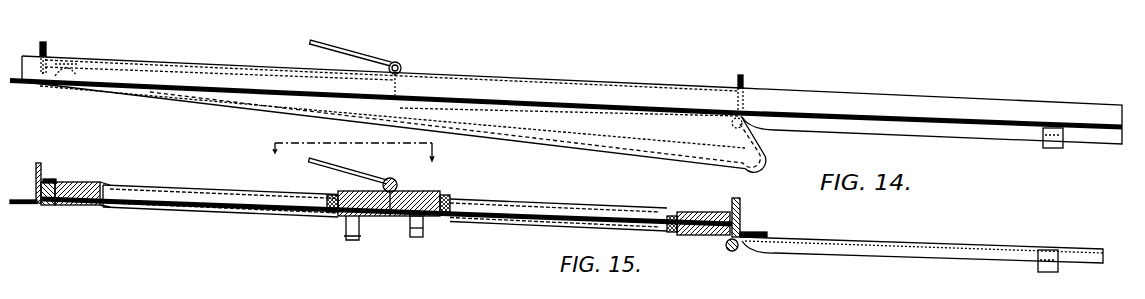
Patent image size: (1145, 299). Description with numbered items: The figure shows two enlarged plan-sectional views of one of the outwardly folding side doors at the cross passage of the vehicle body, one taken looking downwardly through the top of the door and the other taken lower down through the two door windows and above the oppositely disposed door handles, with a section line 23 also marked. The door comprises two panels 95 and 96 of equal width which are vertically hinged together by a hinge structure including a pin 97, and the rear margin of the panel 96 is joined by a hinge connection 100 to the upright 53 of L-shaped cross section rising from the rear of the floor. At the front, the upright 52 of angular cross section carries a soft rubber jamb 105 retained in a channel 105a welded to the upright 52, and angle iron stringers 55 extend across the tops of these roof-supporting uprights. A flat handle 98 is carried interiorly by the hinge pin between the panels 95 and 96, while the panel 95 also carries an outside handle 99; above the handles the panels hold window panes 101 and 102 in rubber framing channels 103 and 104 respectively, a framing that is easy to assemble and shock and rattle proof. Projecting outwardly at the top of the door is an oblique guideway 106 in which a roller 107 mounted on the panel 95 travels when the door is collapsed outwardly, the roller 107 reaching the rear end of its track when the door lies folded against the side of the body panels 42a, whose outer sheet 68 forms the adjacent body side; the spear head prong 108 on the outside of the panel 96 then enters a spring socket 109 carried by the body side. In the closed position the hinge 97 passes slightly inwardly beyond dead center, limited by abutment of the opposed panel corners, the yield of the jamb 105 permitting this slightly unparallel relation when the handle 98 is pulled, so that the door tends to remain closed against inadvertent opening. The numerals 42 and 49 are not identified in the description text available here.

In FIG. 15, the section line 23- 23 is at (358, 153).
In FIG. 14, the rod 42 is at (14, 85).
In FIG. 15, the rod 42 is at (12, 206).
In FIG. 15, the panels 42a is at (908, 248).
In FIG. 14, the rail channel 49 is at (947, 128).
In FIG. 14, the upright 52 is at (40, 50).
In FIG. 15, the upright 52 is at (34, 182).
In FIG. 14, the upright 53 is at (744, 100).
In FIG. 15, the upright 53 is at (745, 214).
In FIG. 14, the angle iron connectors or stringers 55 is at (873, 103).
In FIG. 15, the outer sheet 68 is at (850, 244).
In FIG. 14, the door panel 95 is at (200, 68).
In FIG. 15, the door panel 95 is at (90, 184).
In FIG. 14, the door panel 96 is at (546, 86).
In FIG. 15, the door panel 96 is at (690, 237).
In FIG. 14, the hinge pin 97 is at (403, 64).
In FIG. 15, the hinge pin 97 is at (400, 186).
In FIG. 14, the flat handle 98 is at (308, 47).
In FIG. 15, the flat handle 98 is at (340, 167).
In FIG. 15, the outside handle 99 is at (352, 242).
In FIG. 14, the hinge connection 100 is at (731, 126).
In FIG. 15, the hinge connection 100 is at (729, 252).
In FIG. 15, the window pane 101 is at (192, 190).
In FIG. 15, the window pane 102 is at (568, 210).
In FIG. 15, the rubber framing channel 103 is at (112, 210).
In FIG. 15, the rubber framing channel 104 is at (450, 216).
In FIG. 15, the soft rubber jamb 105 is at (42, 206).
In FIG. 15, the channel 105a is at (50, 179).
In FIG. 14, the oblique guideway 106 is at (623, 160).
In FIG. 14, the roller 107 is at (80, 63).
In FIG. 15, the spear head prong 108 is at (418, 238).
In FIG. 14, the spring socket 109 is at (1049, 149).
In FIG. 15, the spring socket 109 is at (1049, 273).